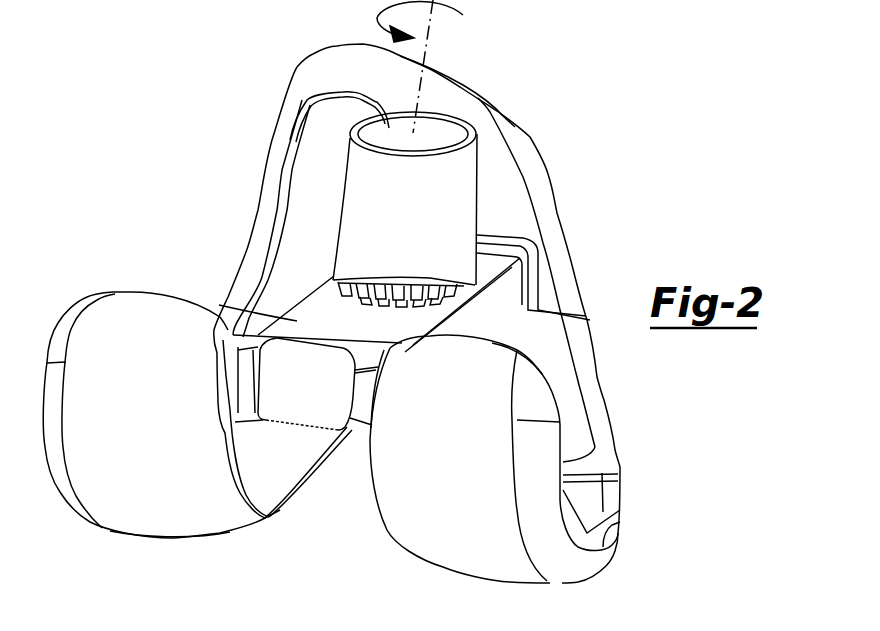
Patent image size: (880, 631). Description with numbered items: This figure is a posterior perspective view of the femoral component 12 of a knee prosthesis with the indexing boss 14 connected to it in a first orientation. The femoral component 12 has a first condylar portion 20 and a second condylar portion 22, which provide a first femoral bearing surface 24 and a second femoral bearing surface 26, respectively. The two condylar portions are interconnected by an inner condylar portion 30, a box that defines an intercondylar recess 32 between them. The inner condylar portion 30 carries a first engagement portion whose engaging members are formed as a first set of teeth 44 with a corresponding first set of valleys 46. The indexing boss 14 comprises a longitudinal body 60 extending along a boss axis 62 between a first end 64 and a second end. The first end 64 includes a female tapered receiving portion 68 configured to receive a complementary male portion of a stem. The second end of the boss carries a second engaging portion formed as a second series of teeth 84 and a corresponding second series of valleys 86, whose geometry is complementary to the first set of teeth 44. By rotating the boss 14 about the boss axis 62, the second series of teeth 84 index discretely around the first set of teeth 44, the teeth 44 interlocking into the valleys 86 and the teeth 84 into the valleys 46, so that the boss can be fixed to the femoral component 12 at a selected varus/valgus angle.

The femoral component 12 is at (322, 305).
The indexing boss 14 is at (452, 174).
The first condylar portion 20 is at (433, 532).
The second condylar portion 22 is at (118, 507).
The first femoral bearing surface 24 is at (599, 577).
The second femoral bearing surface 26 is at (184, 541).
The inner condylar portion 30 is at (325, 284).
The intercondylar recess 32 is at (336, 500).
The first set of teeth 44 is at (427, 293).
The first set of valleys 46 is at (390, 303).
The longitudinal body 60 is at (343, 170).
The boss axis 62 is at (427, 52).
The first end 64 is at (472, 130).
The female tapered receiving portion 68 is at (373, 132).
The second series of teeth 84 is at (450, 288).
The second series of valleys 86 is at (382, 283).